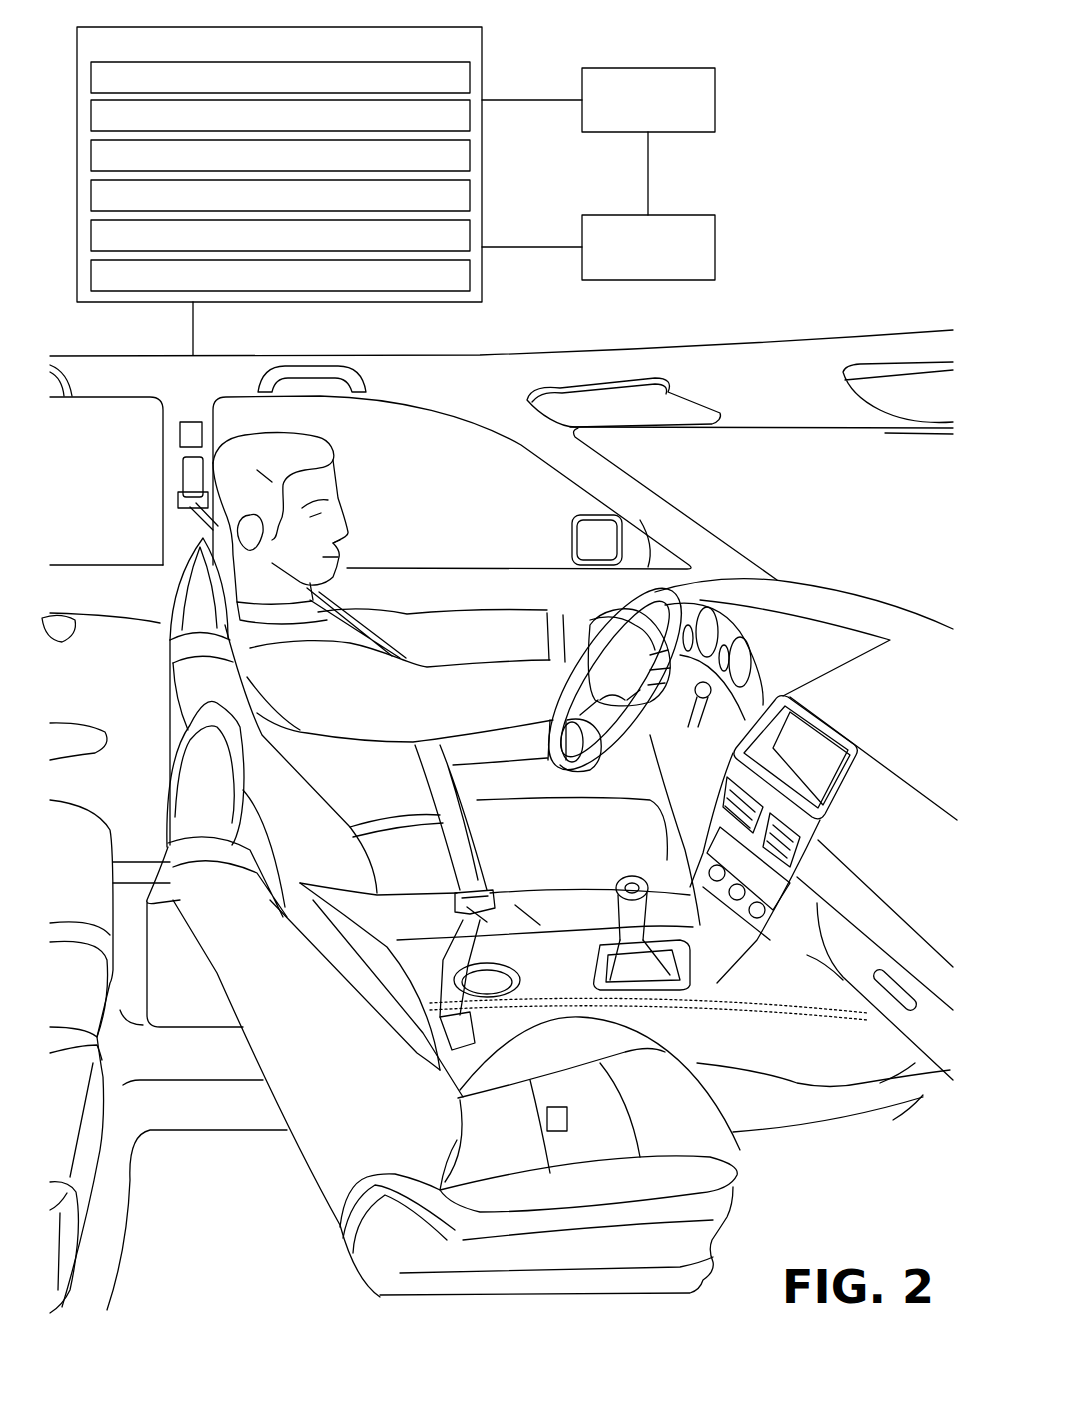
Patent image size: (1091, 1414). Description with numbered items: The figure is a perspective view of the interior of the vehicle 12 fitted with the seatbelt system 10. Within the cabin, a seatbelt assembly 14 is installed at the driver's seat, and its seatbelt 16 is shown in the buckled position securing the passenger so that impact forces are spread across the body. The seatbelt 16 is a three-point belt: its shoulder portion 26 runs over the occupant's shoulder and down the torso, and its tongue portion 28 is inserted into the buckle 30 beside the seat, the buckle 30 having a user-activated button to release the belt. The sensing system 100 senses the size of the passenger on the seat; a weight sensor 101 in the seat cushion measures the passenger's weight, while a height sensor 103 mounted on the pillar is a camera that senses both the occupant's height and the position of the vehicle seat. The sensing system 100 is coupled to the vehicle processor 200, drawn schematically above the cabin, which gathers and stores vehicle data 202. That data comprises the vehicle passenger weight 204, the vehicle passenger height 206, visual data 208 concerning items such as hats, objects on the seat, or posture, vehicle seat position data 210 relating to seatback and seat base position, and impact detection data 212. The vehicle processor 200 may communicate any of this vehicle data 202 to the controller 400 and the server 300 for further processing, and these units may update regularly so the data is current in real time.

The vehicle processor 200 is at (279, 164).
The vehicle data 202 is at (280, 77).
The vehicle passenger weight 204 is at (280, 115).
The vehicle passenger height 206 is at (280, 155).
The visual data 208 is at (280, 195).
The vehicle seat position data 210 is at (280, 235).
The impact detection data 212 is at (280, 275).
The controller 400 is at (598, 141).
The server 300 is at (598, 247).
The vehicle 12 is at (760, 305).
The seatbelt system 10 is at (397, 530).
The height sensor 103 is at (190, 436).
The sensing system 100 is at (160, 716).
The weight sensor 101 is at (567, 1117).
The seatbelt assembly 14 is at (491, 855).
The seatbelt 16 is at (445, 780).
The shoulder portion 26 is at (467, 838).
The tongue portion 28 is at (455, 908).
The buckle 30 is at (527, 917).